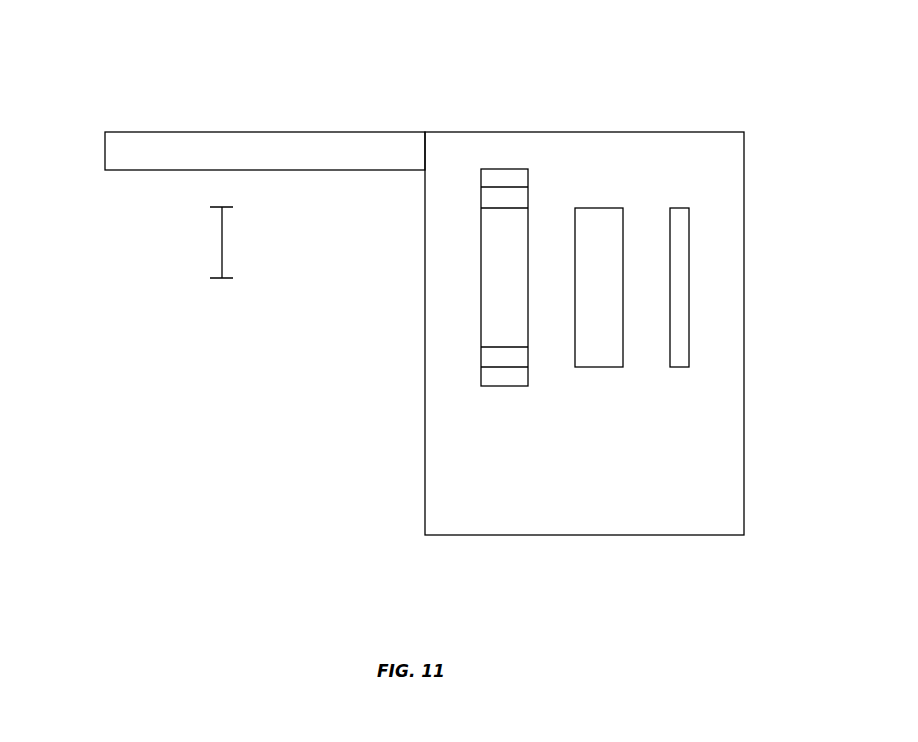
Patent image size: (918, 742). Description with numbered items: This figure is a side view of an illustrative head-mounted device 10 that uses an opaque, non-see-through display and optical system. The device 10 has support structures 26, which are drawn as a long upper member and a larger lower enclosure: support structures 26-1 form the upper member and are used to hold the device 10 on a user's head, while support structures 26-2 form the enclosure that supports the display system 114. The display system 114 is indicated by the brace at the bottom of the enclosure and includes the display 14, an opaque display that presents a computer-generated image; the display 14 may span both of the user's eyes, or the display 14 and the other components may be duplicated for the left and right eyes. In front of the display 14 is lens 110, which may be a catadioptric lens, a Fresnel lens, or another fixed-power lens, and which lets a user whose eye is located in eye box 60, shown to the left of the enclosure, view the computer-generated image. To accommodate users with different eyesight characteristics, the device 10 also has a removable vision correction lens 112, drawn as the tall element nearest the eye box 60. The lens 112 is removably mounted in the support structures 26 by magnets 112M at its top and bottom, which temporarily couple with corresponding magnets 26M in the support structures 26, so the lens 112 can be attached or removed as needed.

The head-mounted device 10 is at (786, 112).
The display 14 is at (678, 368).
The support structures 26 is at (745, 108).
The support structures 26-1 is at (118, 152).
The support structures 26-2 is at (585, 537).
The magnets 26M is at (527, 178).
The eye box 60 is at (218, 280).
The lens 110 is at (600, 368).
The removable vision correction lens 112 is at (490, 255).
The magnets 112M is at (527, 200).
The display system 114 is at (715, 457).